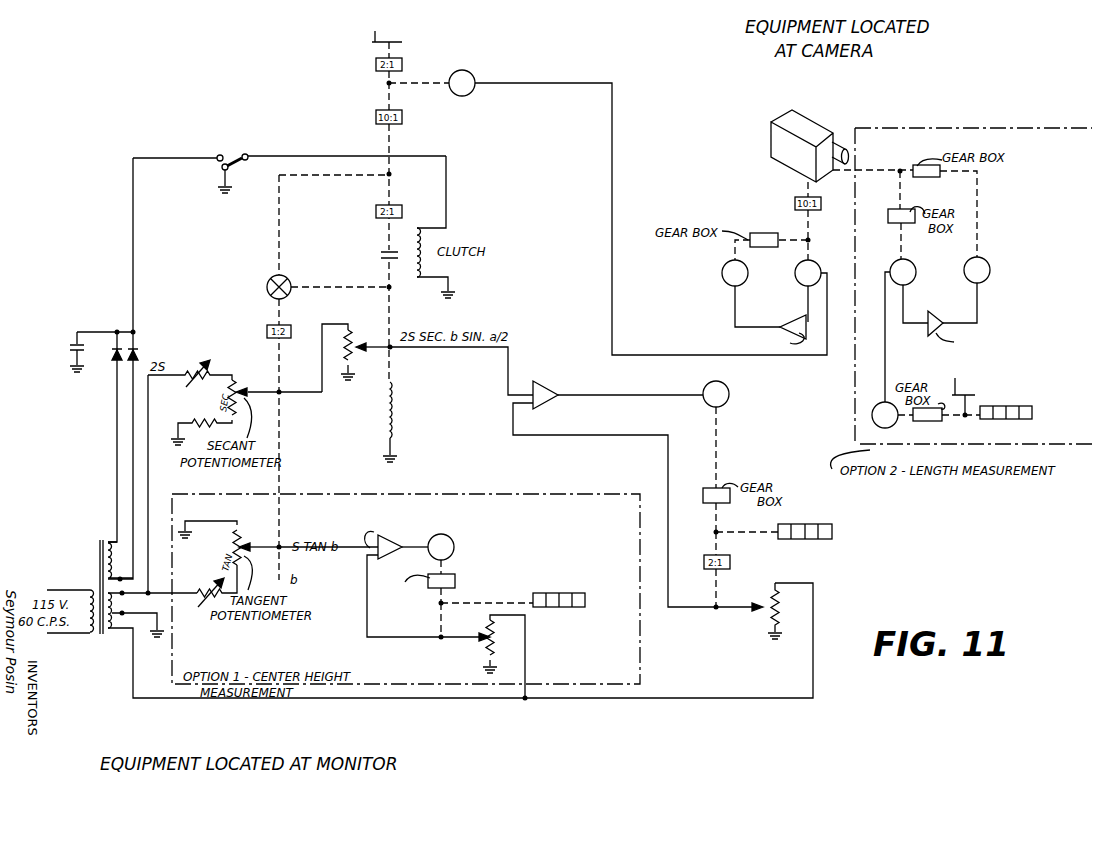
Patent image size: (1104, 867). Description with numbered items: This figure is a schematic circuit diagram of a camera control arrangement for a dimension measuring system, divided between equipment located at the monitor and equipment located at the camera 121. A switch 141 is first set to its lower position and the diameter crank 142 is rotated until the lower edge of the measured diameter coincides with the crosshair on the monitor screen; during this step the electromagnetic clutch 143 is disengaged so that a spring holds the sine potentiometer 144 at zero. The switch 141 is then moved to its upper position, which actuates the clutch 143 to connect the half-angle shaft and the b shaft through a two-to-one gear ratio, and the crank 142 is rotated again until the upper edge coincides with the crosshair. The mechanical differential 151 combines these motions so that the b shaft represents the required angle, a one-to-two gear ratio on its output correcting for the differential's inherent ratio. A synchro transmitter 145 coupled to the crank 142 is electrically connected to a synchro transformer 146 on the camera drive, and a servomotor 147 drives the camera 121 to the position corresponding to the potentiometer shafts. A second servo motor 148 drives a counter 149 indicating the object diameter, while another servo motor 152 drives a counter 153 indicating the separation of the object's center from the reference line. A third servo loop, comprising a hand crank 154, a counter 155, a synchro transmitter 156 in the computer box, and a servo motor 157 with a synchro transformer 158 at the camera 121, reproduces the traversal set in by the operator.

The camera 121 is at (774, 133).
The switch 141 is at (238, 153).
The diameter crank 142 is at (433, 40).
The electromagnetic clutch 143 is at (386, 252).
The sine potentiometer 144 is at (366, 351).
The synchro transmitter 145 is at (450, 82).
The synchro transformer 146 is at (739, 304).
The servomotor 147 is at (726, 283).
The second servo motor 148 is at (671, 428).
The counter 149 is at (811, 540).
The differential 151 is at (267, 285).
The second servo motor 152 is at (454, 547).
The counter 153 is at (543, 607).
The hand crank 154 is at (955, 378).
The counter 155 is at (1032, 412).
The synchro transmitter 156 is at (873, 423).
The servo motor 157 is at (988, 262).
The synchro transformer 158 is at (989, 330).